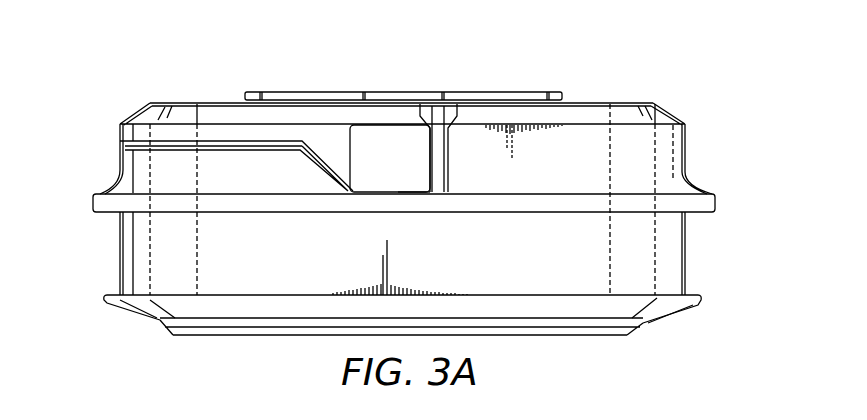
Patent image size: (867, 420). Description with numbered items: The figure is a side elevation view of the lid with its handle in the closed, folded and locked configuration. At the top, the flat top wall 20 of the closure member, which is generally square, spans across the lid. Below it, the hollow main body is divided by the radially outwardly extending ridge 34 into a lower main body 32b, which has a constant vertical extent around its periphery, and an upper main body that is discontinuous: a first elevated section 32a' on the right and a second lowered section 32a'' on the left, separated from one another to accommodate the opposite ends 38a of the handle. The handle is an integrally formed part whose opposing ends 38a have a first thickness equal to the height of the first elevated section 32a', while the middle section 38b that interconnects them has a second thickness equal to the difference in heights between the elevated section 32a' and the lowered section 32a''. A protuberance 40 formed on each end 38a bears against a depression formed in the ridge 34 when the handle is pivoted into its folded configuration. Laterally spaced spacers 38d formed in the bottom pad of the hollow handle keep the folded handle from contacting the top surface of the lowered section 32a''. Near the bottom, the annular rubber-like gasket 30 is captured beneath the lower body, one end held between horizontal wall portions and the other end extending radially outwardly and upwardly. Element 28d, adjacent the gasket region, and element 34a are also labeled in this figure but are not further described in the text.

The flat top wall 20 is at (487, 92).
The bottom plate 28d is at (628, 337).
The gasket 30 is at (678, 315).
The first elevated section 32a' is at (719, 159).
The second lowered section 32a'' is at (78, 159).
The lower main body 32b is at (118, 258).
The ridge 34 is at (93, 198).
The post 34a is at (355, 190).
The handle ends 38a is at (390, 158).
The middle section 38b is at (180, 115).
The spacers 38d is at (165, 147).
The protuberance 40 is at (398, 193).